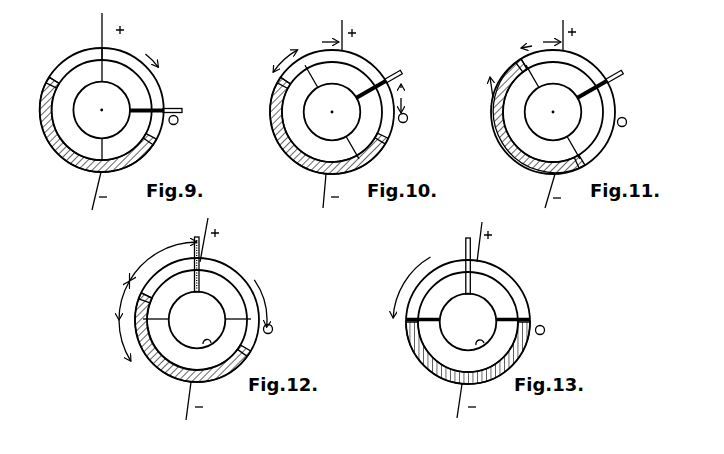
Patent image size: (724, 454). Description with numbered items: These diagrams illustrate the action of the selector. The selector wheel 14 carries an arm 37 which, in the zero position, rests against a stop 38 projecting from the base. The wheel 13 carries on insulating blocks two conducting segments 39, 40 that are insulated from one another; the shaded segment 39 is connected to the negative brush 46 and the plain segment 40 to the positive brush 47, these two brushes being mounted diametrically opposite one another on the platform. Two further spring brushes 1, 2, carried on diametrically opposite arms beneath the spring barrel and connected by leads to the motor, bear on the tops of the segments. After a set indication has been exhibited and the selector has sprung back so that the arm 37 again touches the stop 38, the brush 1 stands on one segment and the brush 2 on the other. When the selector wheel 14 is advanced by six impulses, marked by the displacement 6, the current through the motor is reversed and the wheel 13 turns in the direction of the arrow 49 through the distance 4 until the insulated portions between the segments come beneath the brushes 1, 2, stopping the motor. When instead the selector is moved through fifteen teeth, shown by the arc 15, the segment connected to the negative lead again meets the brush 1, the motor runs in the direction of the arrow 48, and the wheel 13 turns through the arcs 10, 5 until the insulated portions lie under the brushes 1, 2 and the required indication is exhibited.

In FIG. 9, the spring brush 1 is at (100, 72).
In FIG. 10, the spring brush 1 is at (315, 76).
In FIG. 11, the spring brush 1 is at (530, 84).
In FIG. 12, the spring brush 1 is at (156, 320).
In FIG. 13, the spring brush 1 is at (423, 312).
In FIG. 9, the spring brush 2 is at (104, 144).
In FIG. 10, the spring brush 2 is at (346, 148).
In FIG. 11, the spring brush 2 is at (574, 145).
In FIG. 12, the spring brush 2 is at (238, 321).
In FIG. 13, the spring brush 2 is at (513, 331).
In FIG. 10, the angular displacement of brushes 4 is at (285, 61).
In FIG. 12, the angular displacement of lead 5 is at (123, 300).
In FIG. 10, the displacement of positive lead 6 is at (357, 74).
In FIG. 11, the displacement of positive lead 6 is at (541, 42).
In FIG. 12, the angular range of adjustment 10 is at (164, 261).
In FIG. 9, the wheel 13 is at (62, 64).
In FIG. 10, the wheel 13 is at (392, 134).
In FIG. 11, the wheel 13 is at (606, 150).
In FIG. 9, the selector wheel 14 is at (79, 123).
In FIG. 10, the selector wheel 14 is at (310, 123).
In FIG. 11, the selector wheel 14 is at (533, 127).
In FIG. 12, the selector wheel 14 is at (208, 343).
In FIG. 13, the selector wheel 14 is at (482, 343).
In FIG. 12, the angular displacement arc 15 is at (253, 293).
In FIG. 13, the angular displacement arc 15 is at (411, 287).
In FIG. 9, the arm 37 is at (181, 108).
In FIG. 10, the arm 37 is at (402, 72).
In FIG. 11, the arm 37 is at (622, 72).
In FIG. 12, the arm 37 is at (203, 275).
In FIG. 13, the arm 37 is at (472, 280).
In FIG. 9, the stop 38 is at (178, 122).
In FIG. 10, the stop 38 is at (408, 121).
In FIG. 11, the stop 38 is at (627, 125).
In FIG. 12, the stop 38 is at (273, 331).
In FIG. 13, the stop 38 is at (545, 332).
In FIG. 9, the conducting segment 39 is at (70, 157).
In FIG. 10, the conducting segment 39 is at (302, 160).
In FIG. 11, the conducting segment 39 is at (522, 162).
In FIG. 12, the conducting segment 39 is at (163, 377).
In FIG. 13, the conducting segment 39 is at (440, 373).
In FIG. 9, the conducting segment 40 is at (130, 58).
In FIG. 10, the conducting segment 40 is at (395, 63).
In FIG. 11, the conducting segment 40 is at (583, 65).
In FIG. 12, the conducting segment 40 is at (246, 293).
In FIG. 13, the conducting segment 40 is at (515, 292).
In FIG. 9, the negative spring brush 46 is at (92, 198).
In FIG. 10, the negative spring brush 46 is at (322, 200).
In FIG. 11, the negative spring brush 46 is at (545, 200).
In FIG. 12, the negative spring brush 46 is at (184, 405).
In FIG. 13, the negative spring brush 46 is at (457, 405).
In FIG. 9, the positive spring brush 47 is at (101, 20).
In FIG. 10, the positive spring brush 47 is at (341, 20).
In FIG. 11, the positive spring brush 47 is at (562, 20).
In FIG. 12, the positive spring brush 47 is at (212, 224).
In FIG. 13, the positive spring brush 47 is at (479, 250).
In FIG. 12, the arrow 48 is at (126, 351).
In FIG. 11, the arrow 49 is at (489, 90).